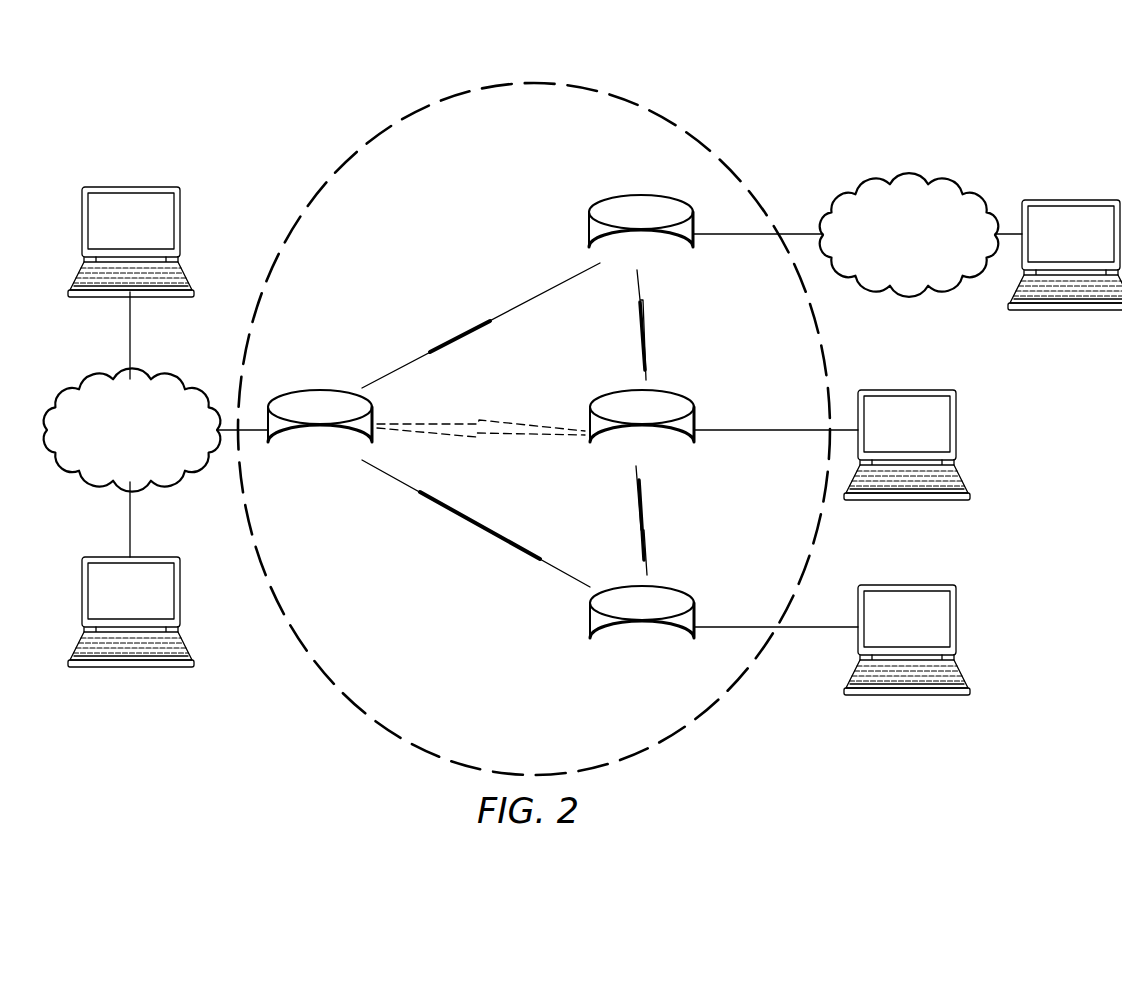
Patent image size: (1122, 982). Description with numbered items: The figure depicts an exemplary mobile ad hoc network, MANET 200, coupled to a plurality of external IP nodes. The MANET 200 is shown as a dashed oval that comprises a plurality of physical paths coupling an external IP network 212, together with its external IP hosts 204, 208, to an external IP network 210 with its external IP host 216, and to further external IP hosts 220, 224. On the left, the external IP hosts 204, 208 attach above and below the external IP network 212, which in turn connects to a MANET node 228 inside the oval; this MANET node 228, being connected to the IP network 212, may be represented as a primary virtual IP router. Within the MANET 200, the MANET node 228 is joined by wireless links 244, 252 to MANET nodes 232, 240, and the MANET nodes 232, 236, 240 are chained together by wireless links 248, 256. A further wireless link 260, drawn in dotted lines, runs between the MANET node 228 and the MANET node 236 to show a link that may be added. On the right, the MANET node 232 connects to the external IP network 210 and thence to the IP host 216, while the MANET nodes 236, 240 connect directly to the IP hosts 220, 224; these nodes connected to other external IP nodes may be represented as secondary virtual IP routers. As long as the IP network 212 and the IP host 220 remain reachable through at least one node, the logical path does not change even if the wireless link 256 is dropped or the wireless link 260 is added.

The MANET 200 is at (403, 111).
The external IP host 204 is at (117, 186).
The external IP host 208 is at (110, 665).
The external IP network 210 is at (935, 186).
The external IP network 212 is at (107, 378).
The external IP host 216 is at (1070, 199).
The external IP host 220 is at (908, 389).
The external IP host 224 is at (905, 693).
The MANET node 228 is at (320, 389).
The MANET node 232 is at (653, 194).
The MANET node 236 is at (668, 389).
The MANET node 240 is at (645, 657).
The wireless link 244 is at (462, 333).
The wireless link 248 is at (642, 302).
The wireless link 252 is at (452, 517).
The wireless link 256 is at (650, 531).
The wireless link 260 is at (516, 424).